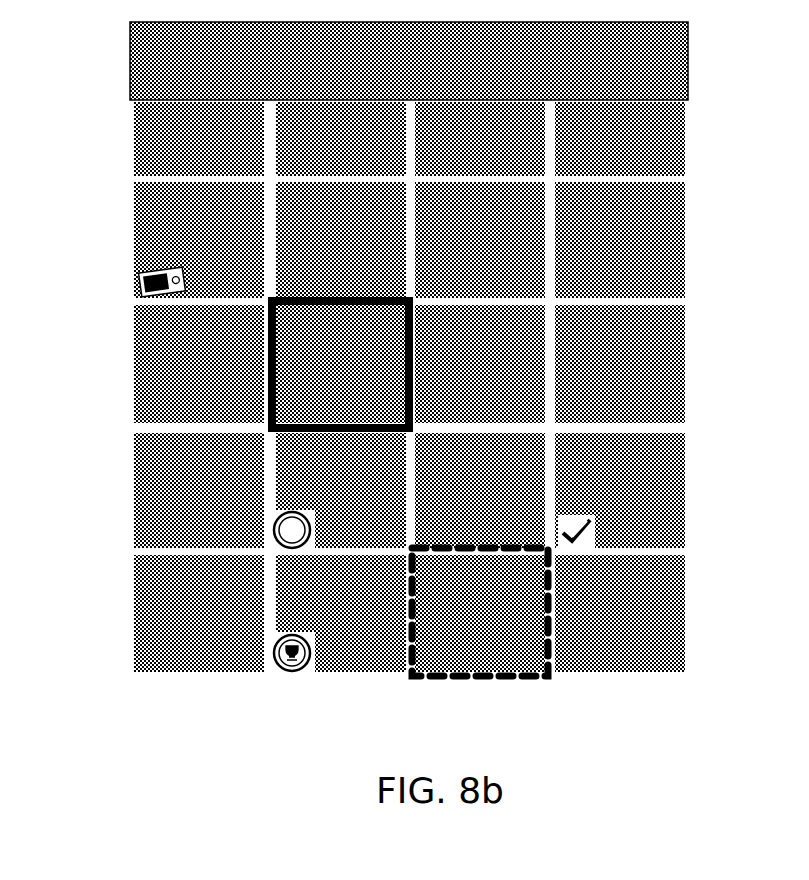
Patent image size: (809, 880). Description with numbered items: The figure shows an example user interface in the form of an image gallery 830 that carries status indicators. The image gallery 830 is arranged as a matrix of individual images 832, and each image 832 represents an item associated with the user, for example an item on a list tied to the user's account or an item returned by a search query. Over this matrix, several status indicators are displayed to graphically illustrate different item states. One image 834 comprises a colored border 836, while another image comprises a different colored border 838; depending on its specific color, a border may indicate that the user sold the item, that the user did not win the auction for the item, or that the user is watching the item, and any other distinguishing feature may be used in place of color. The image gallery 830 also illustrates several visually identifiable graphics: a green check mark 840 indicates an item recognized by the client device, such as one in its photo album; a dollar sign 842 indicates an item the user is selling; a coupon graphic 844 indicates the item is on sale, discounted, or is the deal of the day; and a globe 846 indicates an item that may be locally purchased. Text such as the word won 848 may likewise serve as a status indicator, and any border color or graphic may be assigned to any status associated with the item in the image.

The image gallery 830 is at (688, 72).
The individual images 832 is at (680, 228).
The image 834 is at (383, 330).
The colored border 836 is at (410, 405).
The different colored border 838 is at (533, 680).
The green check mark 840 is at (587, 532).
The dollar sign 842 is at (277, 528).
The coupon graphic 844 is at (138, 288).
The globe 846 is at (284, 672).
The text "won" 848 is at (148, 668).